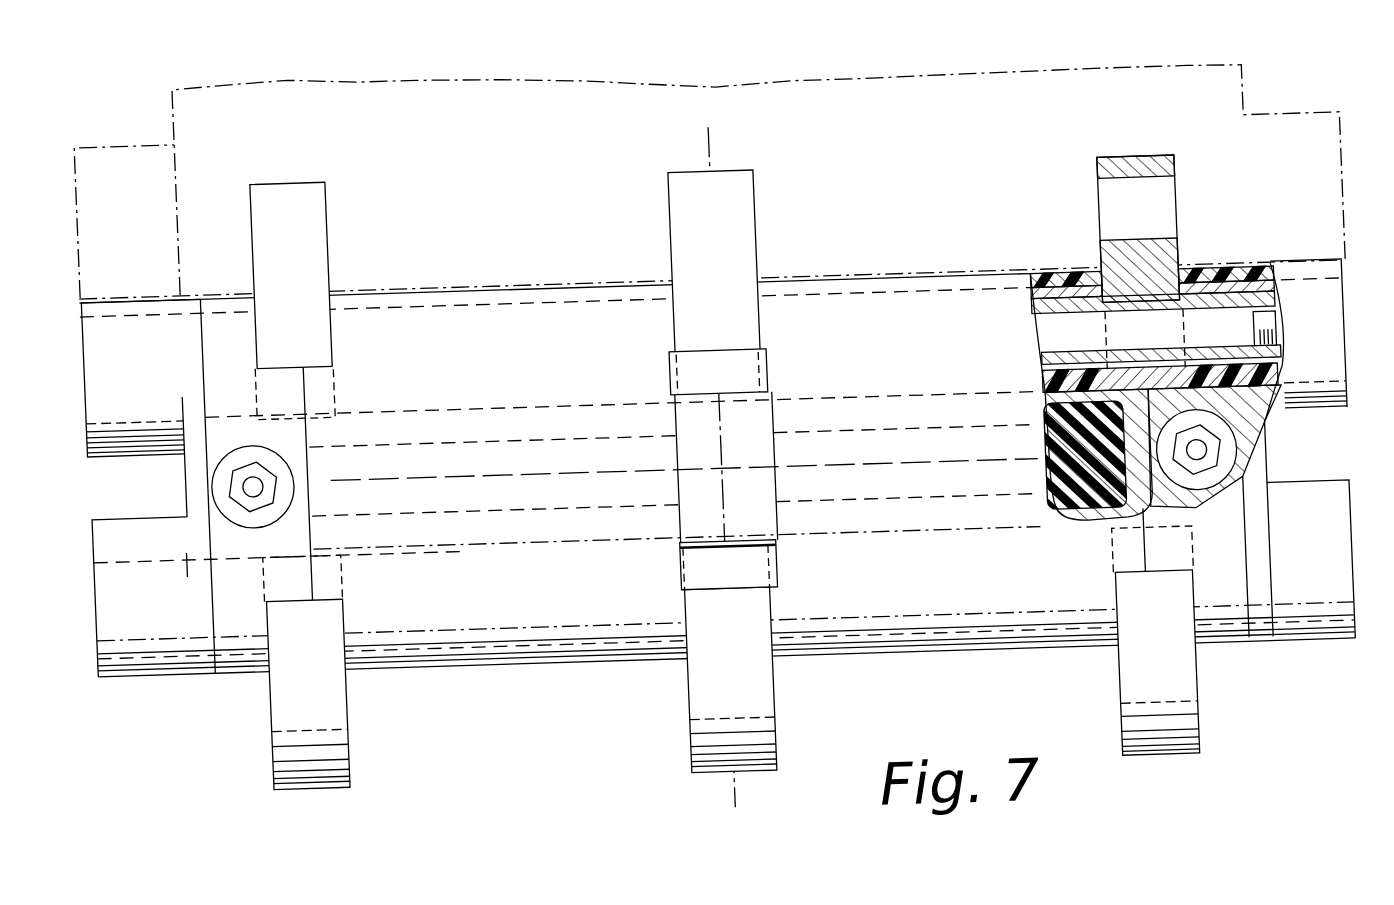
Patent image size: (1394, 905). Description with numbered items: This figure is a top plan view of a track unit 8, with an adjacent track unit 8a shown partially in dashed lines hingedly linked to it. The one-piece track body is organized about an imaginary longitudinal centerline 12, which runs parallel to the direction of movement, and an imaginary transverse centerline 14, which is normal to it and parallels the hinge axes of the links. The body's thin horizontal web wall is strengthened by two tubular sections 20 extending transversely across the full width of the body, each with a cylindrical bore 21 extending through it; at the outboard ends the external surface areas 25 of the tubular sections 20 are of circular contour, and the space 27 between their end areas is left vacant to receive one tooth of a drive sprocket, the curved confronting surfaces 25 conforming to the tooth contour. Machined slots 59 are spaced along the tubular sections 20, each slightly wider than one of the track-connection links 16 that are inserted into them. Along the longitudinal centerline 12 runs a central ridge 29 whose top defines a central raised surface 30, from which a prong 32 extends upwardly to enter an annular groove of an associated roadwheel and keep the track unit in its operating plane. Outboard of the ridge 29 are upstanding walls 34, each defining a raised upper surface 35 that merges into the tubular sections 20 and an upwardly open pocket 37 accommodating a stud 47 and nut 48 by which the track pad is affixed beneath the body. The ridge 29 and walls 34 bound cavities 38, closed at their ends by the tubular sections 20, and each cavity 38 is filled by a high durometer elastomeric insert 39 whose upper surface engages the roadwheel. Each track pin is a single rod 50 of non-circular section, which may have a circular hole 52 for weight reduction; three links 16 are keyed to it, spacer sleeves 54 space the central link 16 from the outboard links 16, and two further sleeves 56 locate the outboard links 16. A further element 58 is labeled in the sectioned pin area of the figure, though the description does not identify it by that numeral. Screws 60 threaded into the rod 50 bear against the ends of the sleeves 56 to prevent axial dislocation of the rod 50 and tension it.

The track unit 8 is at (982, 654).
The adjacent track unit 8a is at (1258, 117).
The longitudinal centerline 12 is at (717, 159).
The transverse centerline 14 is at (816, 471).
The track-connection link 16 is at (266, 179).
The tubular section 20 is at (1087, 287).
The cylindrical bore 21 is at (1251, 292).
The external surface area 25 is at (132, 407).
The space 27 is at (124, 487).
The central ridge 29 is at (706, 385).
The central raised surface 30 is at (748, 371).
The prong 32 is at (754, 514).
The upstanding wall 34 is at (233, 626).
The raised upper surface 35 is at (239, 309).
The pocket 37 is at (246, 431).
The cavity 38 is at (1045, 441).
The elastomeric insert 39 is at (514, 604).
The stud 47 is at (254, 473).
The nut 48 is at (274, 487).
The rod 50 is at (1046, 369).
The circular hole 52 is at (1050, 329).
The spacer sleeve 54 is at (1049, 301).
The sleeve 56 is at (1276, 308).
The spacer layer 58 is at (1216, 291).
The slot 59 is at (255, 335).
The screw 60 is at (1284, 341).